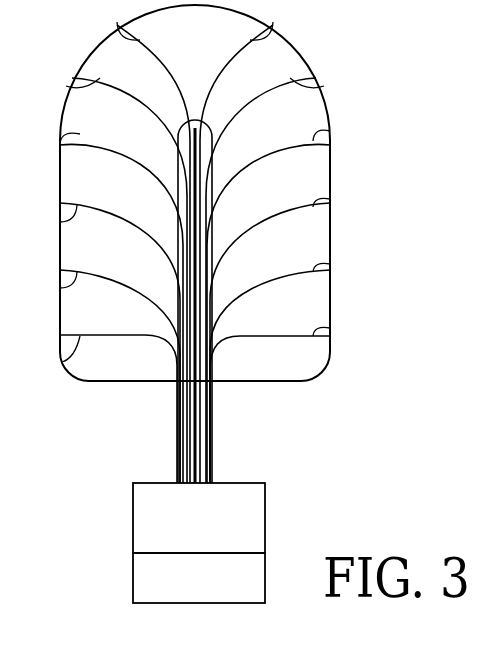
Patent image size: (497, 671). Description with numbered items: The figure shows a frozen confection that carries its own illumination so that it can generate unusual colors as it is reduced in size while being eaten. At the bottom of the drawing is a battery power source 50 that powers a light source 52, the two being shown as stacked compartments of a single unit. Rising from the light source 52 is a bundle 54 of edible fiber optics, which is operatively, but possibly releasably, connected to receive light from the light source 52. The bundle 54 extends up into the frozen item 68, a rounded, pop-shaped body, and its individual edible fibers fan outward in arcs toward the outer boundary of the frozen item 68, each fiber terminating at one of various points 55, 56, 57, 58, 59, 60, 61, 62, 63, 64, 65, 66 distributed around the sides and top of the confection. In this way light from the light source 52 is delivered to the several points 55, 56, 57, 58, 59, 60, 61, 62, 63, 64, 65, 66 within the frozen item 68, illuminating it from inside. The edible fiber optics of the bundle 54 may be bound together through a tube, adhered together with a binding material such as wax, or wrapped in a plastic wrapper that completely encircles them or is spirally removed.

The battery power source 50 is at (268, 560).
The light source 52 is at (268, 504).
The bundle of edible fiber optics 54 is at (211, 453).
The point 55 is at (62, 362).
The point 56 is at (62, 282).
The point 57 is at (60, 219).
The point 58 is at (60, 152).
The point 59 is at (72, 80).
The point 60 is at (122, 27).
The point 61 is at (273, 33).
The point 62 is at (316, 82).
The point 63 is at (330, 133).
The point 64 is at (330, 203).
The point 65 is at (330, 266).
The point 66 is at (333, 333).
The frozen item 68 is at (213, 42).